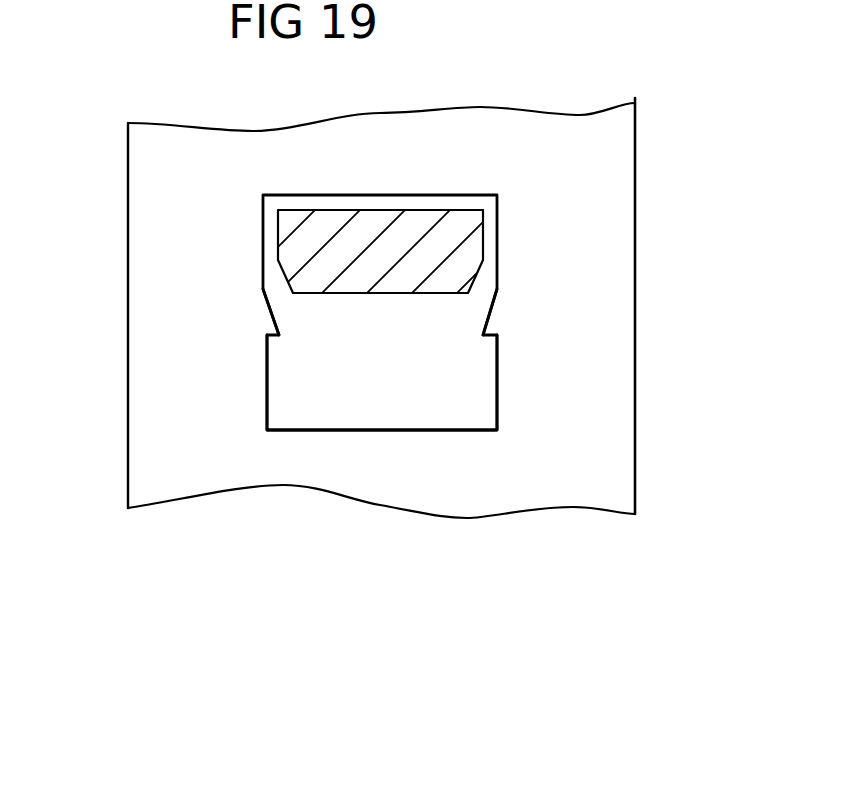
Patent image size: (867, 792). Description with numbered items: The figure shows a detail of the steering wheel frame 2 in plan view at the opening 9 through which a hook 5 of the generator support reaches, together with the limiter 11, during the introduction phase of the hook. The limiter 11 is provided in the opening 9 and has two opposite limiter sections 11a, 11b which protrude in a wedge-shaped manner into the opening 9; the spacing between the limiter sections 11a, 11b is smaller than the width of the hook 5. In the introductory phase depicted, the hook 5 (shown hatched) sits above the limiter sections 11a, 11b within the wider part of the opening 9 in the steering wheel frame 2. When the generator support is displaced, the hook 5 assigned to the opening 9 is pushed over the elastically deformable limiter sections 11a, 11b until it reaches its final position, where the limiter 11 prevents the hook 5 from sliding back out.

The steering wheel frame 2 is at (582, 170).
The hook 5 is at (380, 268).
The opening 9 is at (475, 383).
The limiter 11 is at (520, 299).
The limiter section 11a is at (270, 318).
The limiter section 11b is at (490, 317).